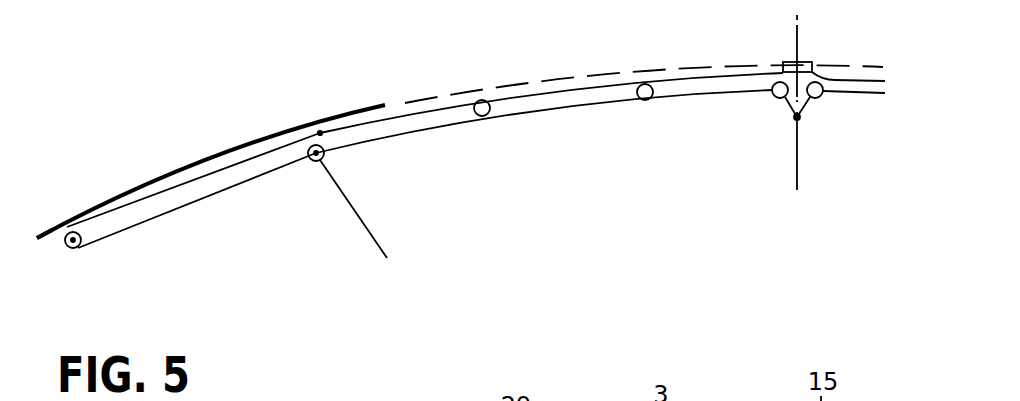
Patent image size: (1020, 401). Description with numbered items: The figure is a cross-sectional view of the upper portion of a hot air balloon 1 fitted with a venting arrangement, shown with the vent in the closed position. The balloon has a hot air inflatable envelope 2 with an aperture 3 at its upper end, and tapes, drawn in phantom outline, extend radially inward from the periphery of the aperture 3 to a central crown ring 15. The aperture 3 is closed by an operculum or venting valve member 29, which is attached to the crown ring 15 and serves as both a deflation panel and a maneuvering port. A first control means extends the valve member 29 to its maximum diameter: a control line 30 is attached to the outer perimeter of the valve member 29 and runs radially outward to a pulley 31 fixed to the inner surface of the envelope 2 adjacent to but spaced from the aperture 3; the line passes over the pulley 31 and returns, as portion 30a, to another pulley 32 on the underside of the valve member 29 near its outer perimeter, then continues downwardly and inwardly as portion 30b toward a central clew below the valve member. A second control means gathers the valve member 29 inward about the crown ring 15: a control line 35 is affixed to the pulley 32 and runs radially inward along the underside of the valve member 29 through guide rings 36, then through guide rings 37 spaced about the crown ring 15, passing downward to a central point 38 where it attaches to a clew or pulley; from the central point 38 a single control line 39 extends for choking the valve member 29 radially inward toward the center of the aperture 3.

The hot air balloon 1 is at (187, 152).
The envelope 2 is at (47, 241).
The aperture 3 is at (603, 68).
The crown ring 15 is at (812, 62).
The venting valve member 29 is at (523, 95).
The control line 30 is at (245, 160).
The control line portion 30a is at (230, 186).
The control line portion 30b is at (360, 213).
The pulley 31 is at (80, 249).
The pulley 32 is at (313, 162).
The control line 35 is at (439, 127).
The guide ring 36 is at (647, 100).
The guide ring 37 is at (776, 97).
The central point 38 is at (797, 119).
The control line 39 is at (798, 152).